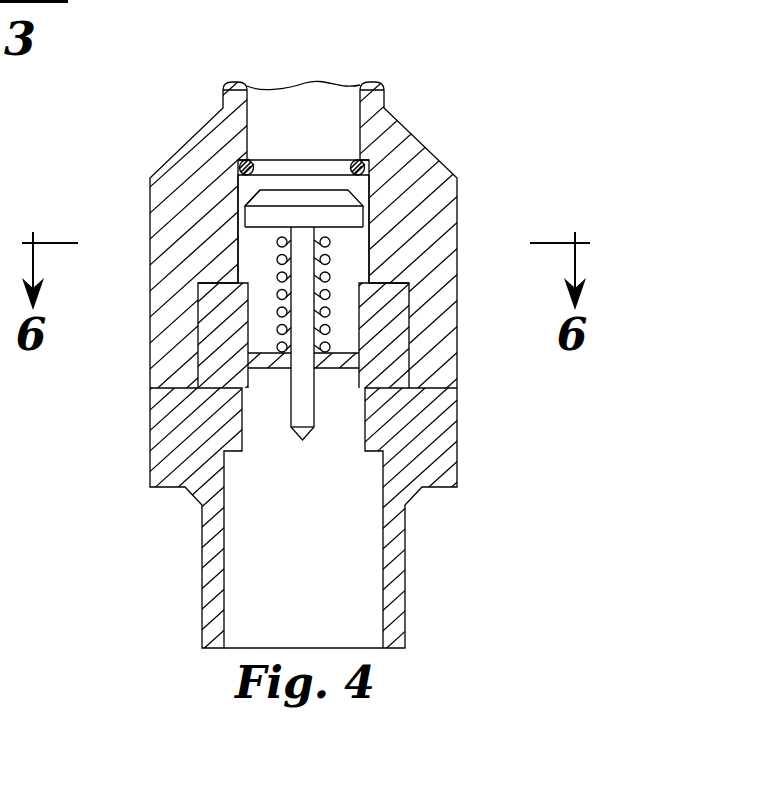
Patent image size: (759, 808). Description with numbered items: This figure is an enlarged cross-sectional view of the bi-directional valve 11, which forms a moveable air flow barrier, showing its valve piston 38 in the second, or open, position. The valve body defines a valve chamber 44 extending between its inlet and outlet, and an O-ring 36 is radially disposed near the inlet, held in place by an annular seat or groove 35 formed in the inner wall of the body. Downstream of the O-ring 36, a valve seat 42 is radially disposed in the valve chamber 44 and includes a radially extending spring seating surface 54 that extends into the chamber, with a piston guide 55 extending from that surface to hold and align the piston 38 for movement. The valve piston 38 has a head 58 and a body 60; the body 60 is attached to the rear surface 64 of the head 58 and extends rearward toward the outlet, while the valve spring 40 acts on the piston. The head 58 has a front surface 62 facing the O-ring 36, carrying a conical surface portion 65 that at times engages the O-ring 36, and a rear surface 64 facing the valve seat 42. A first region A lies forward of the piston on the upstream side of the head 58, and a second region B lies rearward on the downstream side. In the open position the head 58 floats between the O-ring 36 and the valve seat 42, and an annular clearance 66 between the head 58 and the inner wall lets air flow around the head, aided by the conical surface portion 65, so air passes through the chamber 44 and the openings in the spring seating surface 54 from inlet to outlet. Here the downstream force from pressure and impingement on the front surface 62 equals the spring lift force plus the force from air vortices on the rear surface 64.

The bi-directional valve 11 is at (450, 80).
The annular seat or groove 35 is at (386, 119).
The O-ring 36 is at (237, 166).
The valve piston 38 is at (292, 180).
The valve spring 40 is at (277, 245).
The valve seat 42 is at (362, 281).
The valve chamber 44 is at (247, 236).
The spring seating surface 54 is at (273, 358).
The piston guide 55 is at (287, 323).
The head 58 is at (326, 189).
The body 60 is at (297, 276).
The front surface 62 is at (273, 189).
The rear surface 64 is at (352, 229).
The conical surface portion 65 is at (371, 166).
The annular clearance 66 is at (370, 217).
The first region A is at (346, 88).
The second region B is at (366, 574).